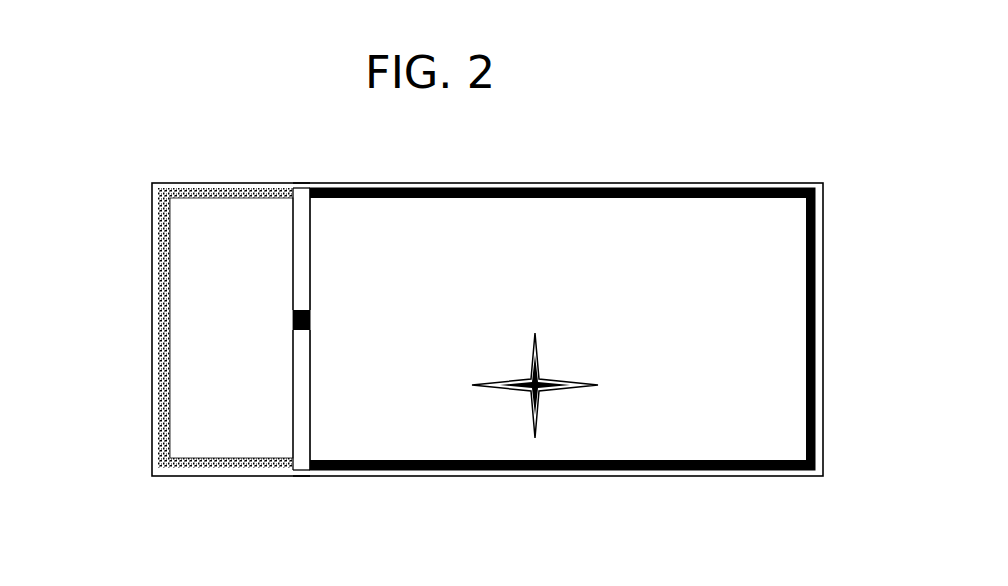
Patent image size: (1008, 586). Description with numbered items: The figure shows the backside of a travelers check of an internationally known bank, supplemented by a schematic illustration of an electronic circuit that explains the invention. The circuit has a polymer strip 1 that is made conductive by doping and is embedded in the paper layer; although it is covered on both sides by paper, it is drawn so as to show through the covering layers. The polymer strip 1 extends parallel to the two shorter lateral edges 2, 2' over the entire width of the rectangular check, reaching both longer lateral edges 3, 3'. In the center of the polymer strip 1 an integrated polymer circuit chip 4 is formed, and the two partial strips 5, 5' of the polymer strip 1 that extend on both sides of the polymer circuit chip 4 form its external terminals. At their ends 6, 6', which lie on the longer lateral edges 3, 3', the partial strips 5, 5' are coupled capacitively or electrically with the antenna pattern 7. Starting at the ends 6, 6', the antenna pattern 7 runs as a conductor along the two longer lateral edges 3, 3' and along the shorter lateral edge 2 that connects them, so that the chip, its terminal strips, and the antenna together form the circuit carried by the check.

The polymer strip 1 is at (282, 352).
The shorter lateral edge 2 is at (601, 334).
The shorter lateral edge 2' is at (160, 328).
The longer lateral edge 3 is at (558, 163).
The longer lateral edge 3' is at (558, 500).
The polymer circuit chip 4 is at (292, 322).
The partial strip 5 is at (232, 210).
The partial strip 5' is at (265, 438).
The end of partial strip 6 is at (307, 157).
The end of partial strip 6' is at (321, 508).
The antenna pattern 7 is at (785, 192).